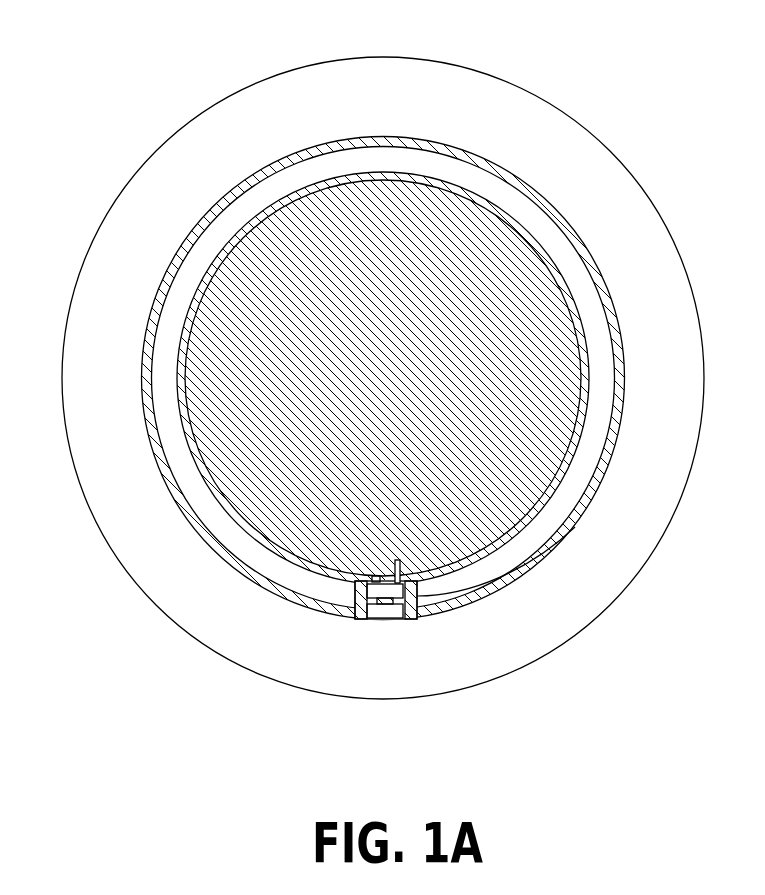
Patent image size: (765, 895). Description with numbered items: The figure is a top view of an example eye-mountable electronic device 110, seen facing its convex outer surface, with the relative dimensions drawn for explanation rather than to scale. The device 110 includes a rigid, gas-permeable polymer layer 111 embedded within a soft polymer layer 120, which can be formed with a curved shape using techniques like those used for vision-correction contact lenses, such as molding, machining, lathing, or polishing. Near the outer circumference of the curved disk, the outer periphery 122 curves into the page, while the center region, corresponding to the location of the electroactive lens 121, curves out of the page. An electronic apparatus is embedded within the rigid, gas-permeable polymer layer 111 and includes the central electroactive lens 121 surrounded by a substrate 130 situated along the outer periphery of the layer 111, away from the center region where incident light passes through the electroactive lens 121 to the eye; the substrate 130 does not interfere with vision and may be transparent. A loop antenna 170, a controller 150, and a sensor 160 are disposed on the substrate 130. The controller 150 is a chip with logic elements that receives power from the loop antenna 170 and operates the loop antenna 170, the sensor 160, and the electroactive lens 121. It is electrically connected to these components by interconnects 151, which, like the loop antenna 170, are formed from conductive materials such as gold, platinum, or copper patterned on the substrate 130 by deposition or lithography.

The eye-mountable electronic device 110 is at (379, 376).
The rigid, gas-permeable polymer layer 111 is at (363, 410).
The soft polymer layer 120 is at (95, 552).
The electroactive lens 121 is at (350, 183).
The outer periphery 122 is at (383, 353).
The substrate 130 is at (573, 532).
The controller 150 is at (411, 554).
The interconnects 151 is at (402, 578).
The sensor 160 is at (380, 614).
The loop antenna 170 is at (508, 567).